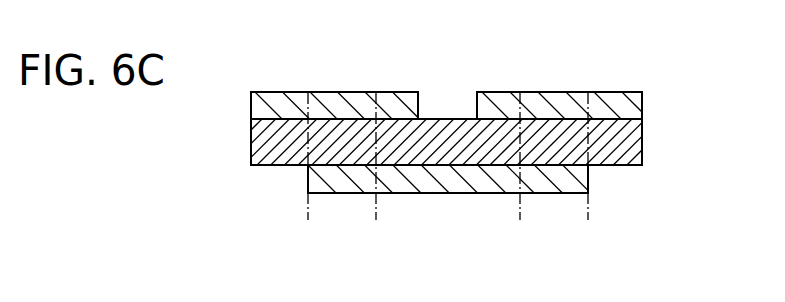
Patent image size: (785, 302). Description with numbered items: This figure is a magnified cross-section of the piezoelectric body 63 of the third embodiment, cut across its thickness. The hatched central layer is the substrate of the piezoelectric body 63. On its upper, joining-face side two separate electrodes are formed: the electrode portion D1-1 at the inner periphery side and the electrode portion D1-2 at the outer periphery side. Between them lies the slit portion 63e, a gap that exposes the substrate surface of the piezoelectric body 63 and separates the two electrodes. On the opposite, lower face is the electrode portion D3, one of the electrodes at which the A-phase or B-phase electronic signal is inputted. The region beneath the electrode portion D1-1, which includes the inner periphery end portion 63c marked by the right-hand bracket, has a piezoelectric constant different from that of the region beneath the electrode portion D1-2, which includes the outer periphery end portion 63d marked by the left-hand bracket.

The piezoelectric body 63 is at (634, 144).
The inner periphery end portion 63c is at (588, 92).
The outer periphery end portion 63d is at (376, 92).
The slit portion 63e is at (445, 119).
The electrode portion D1-1 is at (625, 92).
The electrode portion D1-2 is at (262, 92).
The electrode portion D3 is at (470, 182).